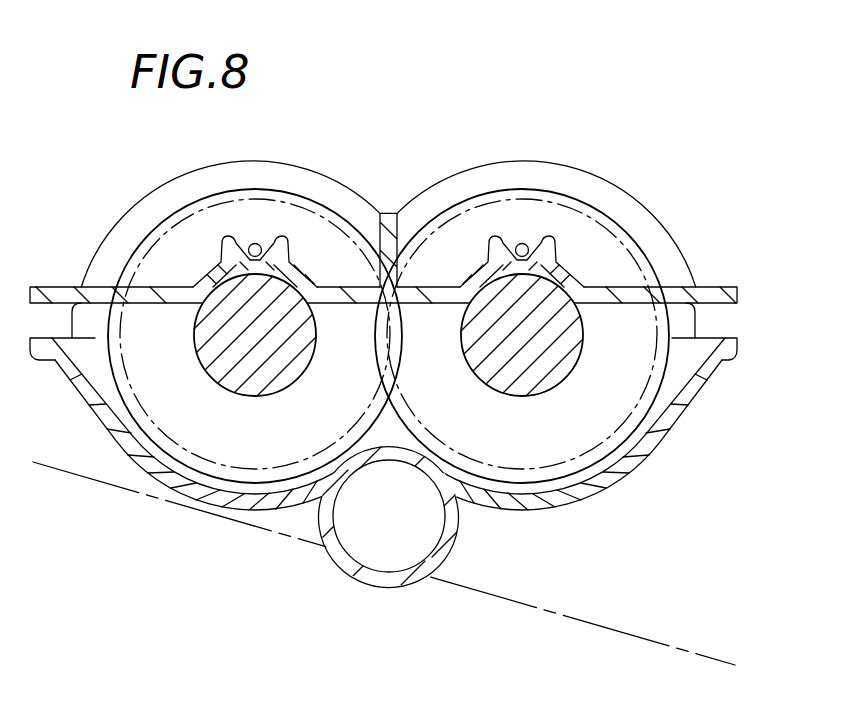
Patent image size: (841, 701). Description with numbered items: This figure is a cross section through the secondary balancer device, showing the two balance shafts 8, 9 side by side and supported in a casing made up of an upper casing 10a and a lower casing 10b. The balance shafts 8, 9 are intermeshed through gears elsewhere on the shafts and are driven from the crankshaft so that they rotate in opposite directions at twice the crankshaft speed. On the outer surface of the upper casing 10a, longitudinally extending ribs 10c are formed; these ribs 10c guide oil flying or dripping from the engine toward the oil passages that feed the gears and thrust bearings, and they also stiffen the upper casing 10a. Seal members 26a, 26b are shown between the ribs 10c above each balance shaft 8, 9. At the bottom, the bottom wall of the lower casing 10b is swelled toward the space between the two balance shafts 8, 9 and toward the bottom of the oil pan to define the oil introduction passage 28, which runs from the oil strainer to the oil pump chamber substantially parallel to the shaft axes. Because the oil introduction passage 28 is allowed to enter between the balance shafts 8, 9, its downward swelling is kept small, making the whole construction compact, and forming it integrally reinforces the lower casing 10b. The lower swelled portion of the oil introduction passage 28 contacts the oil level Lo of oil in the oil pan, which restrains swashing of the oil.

The balance shaft 8 is at (282, 384).
The balance shaft 9 is at (553, 384).
The upper casing 10a is at (713, 286).
The lower casing 10b is at (697, 385).
The rib 10c is at (228, 236).
The first seal member 26a is at (256, 244).
The second seal member 26b is at (520, 244).
The oil introduction passage 28 is at (408, 570).
The oil level Lo is at (644, 640).